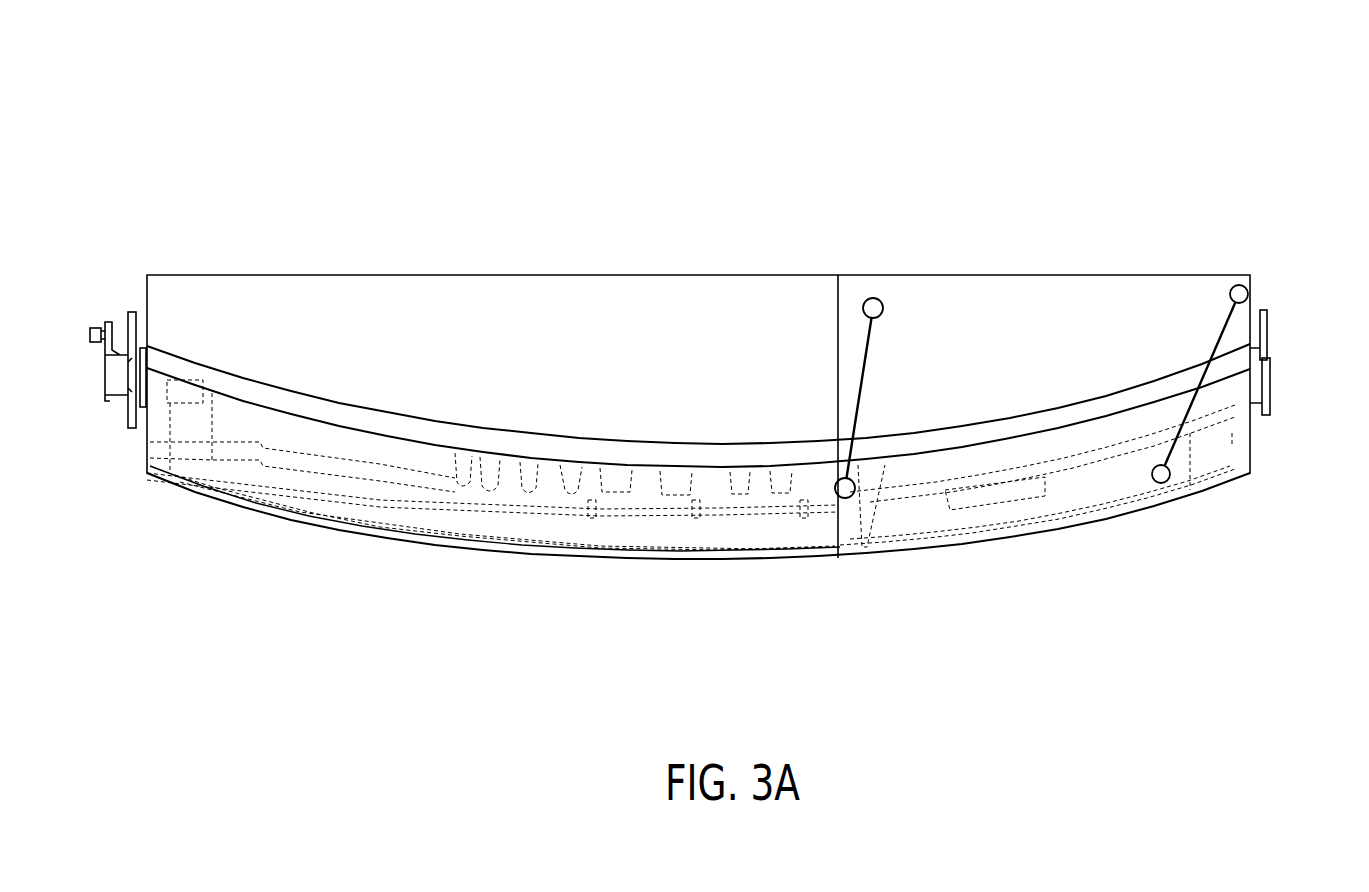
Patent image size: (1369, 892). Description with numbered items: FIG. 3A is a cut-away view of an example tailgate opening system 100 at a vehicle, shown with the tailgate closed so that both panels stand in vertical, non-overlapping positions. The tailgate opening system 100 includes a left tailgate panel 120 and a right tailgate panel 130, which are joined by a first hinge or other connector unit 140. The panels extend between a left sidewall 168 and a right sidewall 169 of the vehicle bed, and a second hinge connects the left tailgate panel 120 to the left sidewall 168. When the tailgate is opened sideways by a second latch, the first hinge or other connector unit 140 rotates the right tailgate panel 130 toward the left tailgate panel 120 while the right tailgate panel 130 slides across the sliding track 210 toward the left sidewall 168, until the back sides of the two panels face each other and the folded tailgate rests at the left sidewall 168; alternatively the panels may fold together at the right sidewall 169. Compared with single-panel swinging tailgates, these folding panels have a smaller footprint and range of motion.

The tailgate opening system 100 is at (92, 150).
The left tailgate panel 120 is at (148, 293).
The right tailgate panel 130 is at (1239, 325).
The first hinge or other connector unit 140 is at (882, 283).
The left sidewall 168 is at (120, 453).
The right sidewall 169 is at (1289, 364).
The sliding track 210 is at (668, 537).